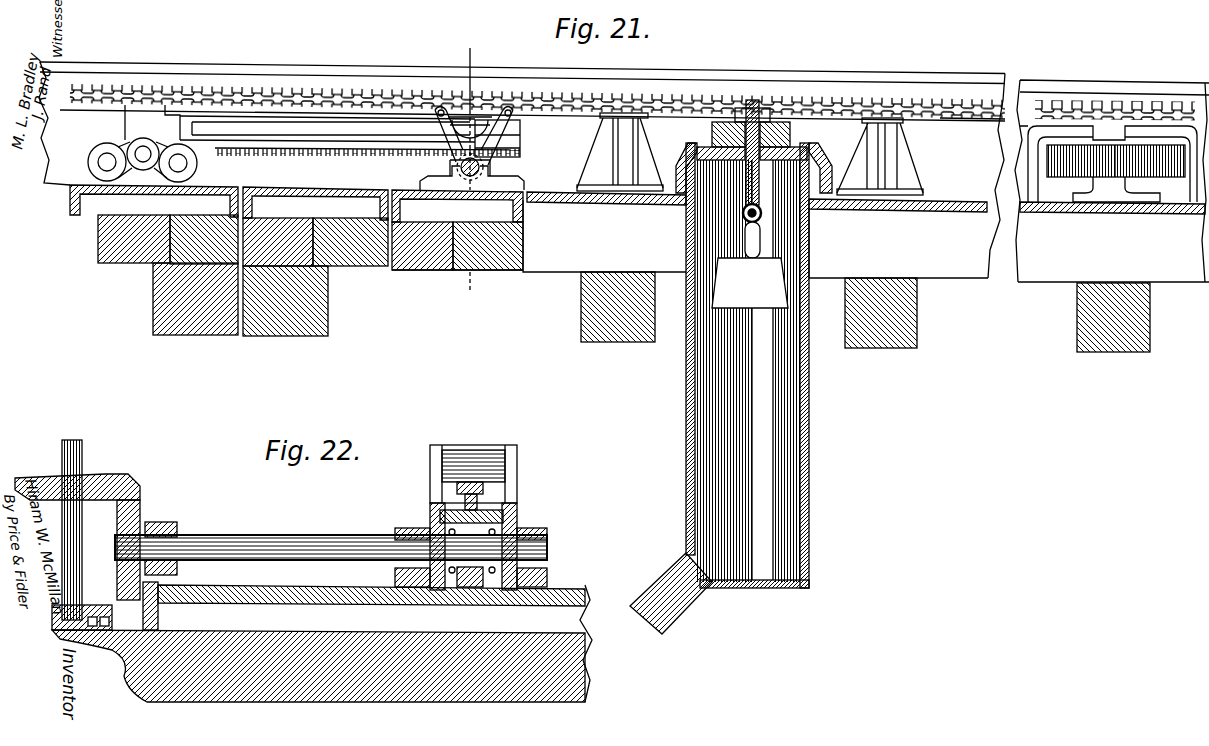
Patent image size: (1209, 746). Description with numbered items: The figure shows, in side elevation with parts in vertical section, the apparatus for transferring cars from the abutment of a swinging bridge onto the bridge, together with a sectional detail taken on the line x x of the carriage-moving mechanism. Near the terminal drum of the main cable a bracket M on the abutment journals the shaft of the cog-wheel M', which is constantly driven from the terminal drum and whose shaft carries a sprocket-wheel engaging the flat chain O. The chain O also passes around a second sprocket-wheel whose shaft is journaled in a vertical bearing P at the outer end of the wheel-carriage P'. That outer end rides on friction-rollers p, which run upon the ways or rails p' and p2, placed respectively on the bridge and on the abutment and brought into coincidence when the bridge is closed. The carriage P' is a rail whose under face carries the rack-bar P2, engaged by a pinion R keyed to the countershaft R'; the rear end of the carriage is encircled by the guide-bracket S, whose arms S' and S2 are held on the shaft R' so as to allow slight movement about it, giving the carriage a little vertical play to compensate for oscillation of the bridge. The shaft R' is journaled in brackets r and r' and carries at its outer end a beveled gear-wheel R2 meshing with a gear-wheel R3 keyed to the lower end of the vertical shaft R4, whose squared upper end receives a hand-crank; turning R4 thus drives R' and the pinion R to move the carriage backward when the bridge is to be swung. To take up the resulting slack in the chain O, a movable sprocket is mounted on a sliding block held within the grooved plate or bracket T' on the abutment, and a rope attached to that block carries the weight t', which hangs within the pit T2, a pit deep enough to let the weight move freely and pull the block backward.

In FIG. 21, the vertical bearing P is at (129, 122).
In FIG. 21, the wheel-carriage P' is at (350, 133).
In FIG. 21, the rack-bar P2 is at (360, 178).
In FIG. 21, the friction-rollers p is at (122, 160).
In FIG. 21, the way or rail p' is at (158, 249).
In FIG. 21, the way or rail p2 is at (270, 170).
In FIG. 21, the arm of guide-bracket S' is at (511, 138).
In FIG. 22, the arm of guide-bracket S' is at (452, 474).
In FIG. 21, the section line x is at (464, 165).
In FIG. 21, the grooved plate or bracket T' is at (757, 150).
In FIG. 21, the flat chain O is at (992, 118).
In FIG. 21, the bracket M is at (1116, 118).
In FIG. 21, the cog-wheel M' is at (1126, 217).
In FIG. 21, the weight t' is at (750, 283).
In FIG. 21, the pit T2 is at (810, 412).
In FIG. 22, the guide-bracket S is at (476, 444).
In FIG. 22, the arm of guide-bracket S2 is at (512, 492).
In FIG. 22, the pinion R is at (534, 544).
In FIG. 22, the countershaft R' is at (331, 531).
In FIG. 22, the beveled gear-wheel R2 is at (142, 503).
In FIG. 22, the gear-wheel R3 is at (112, 478).
In FIG. 22, the vertical shaft R4 is at (62, 450).
In FIG. 22, the bracket r is at (173, 538).
In FIG. 22, the bracket r' is at (475, 546).